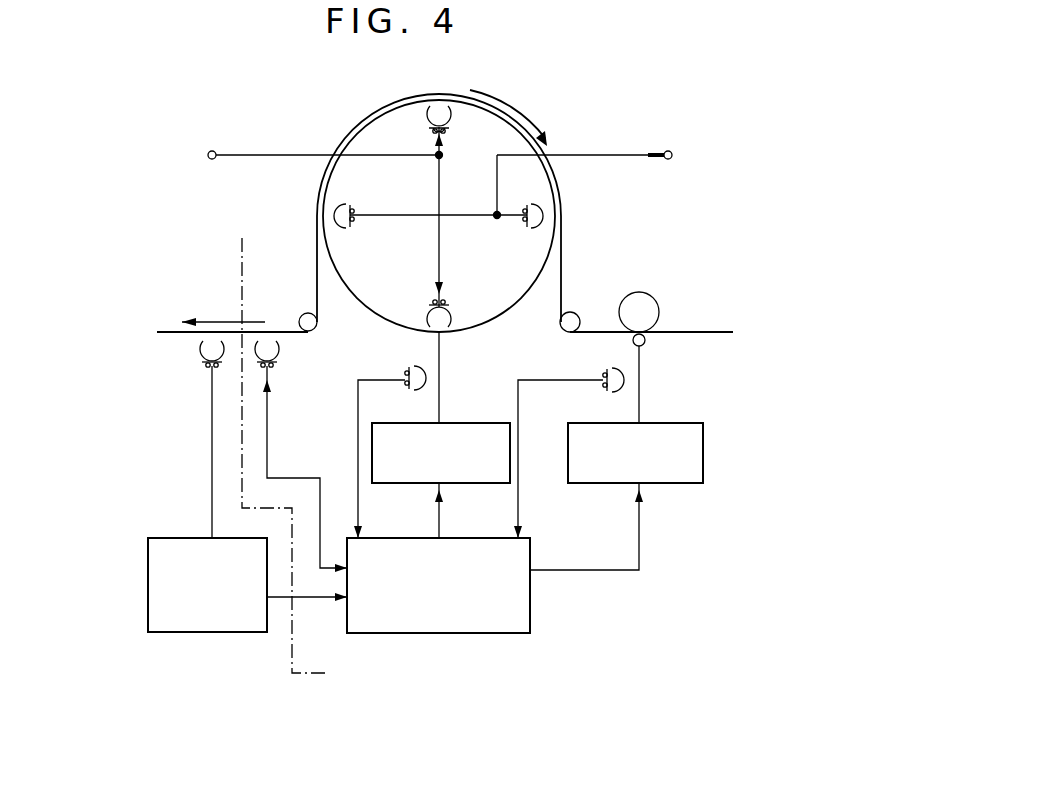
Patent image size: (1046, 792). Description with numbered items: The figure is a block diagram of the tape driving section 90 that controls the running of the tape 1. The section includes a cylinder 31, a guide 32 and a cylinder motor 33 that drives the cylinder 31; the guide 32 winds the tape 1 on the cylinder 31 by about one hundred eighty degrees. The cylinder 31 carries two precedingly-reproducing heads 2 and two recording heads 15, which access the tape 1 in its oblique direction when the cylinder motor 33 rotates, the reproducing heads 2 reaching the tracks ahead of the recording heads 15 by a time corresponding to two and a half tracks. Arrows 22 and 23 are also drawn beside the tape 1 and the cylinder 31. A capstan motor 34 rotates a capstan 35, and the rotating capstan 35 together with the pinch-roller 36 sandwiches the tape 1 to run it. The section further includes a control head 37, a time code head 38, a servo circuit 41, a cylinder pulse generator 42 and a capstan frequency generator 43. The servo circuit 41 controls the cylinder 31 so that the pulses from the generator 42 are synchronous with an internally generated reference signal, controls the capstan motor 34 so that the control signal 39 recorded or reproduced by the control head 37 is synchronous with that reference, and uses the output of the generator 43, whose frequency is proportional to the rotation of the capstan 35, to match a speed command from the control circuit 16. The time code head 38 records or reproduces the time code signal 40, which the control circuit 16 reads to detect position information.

The tape 1 is at (562, 240).
The precedingly-reproducing heads 2 is at (344, 206).
The recording heads 15 is at (452, 122).
The control circuit 16 is at (166, 536).
The magnetic tape 22 is at (210, 320).
The rotation direction of drum 23 is at (527, 103).
The cylinder 31 is at (505, 329).
The guide 32 is at (300, 314).
The cylinder motor 33 is at (476, 423).
The capstan motor 34 is at (664, 422).
The capstan 35 is at (646, 343).
The pinch-roller 36 is at (656, 300).
The control head 37 is at (278, 358).
The time code head 38 is at (200, 356).
The control signal 39 is at (270, 442).
The time code signal 40 is at (210, 442).
The servo circuit 41 is at (530, 612).
The cylinder pulse generator 42 is at (419, 364).
The capstan frequency generator 43 is at (612, 392).
The tape driving section 90 is at (737, 222).